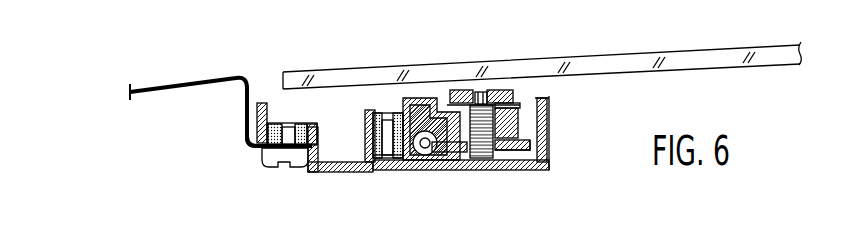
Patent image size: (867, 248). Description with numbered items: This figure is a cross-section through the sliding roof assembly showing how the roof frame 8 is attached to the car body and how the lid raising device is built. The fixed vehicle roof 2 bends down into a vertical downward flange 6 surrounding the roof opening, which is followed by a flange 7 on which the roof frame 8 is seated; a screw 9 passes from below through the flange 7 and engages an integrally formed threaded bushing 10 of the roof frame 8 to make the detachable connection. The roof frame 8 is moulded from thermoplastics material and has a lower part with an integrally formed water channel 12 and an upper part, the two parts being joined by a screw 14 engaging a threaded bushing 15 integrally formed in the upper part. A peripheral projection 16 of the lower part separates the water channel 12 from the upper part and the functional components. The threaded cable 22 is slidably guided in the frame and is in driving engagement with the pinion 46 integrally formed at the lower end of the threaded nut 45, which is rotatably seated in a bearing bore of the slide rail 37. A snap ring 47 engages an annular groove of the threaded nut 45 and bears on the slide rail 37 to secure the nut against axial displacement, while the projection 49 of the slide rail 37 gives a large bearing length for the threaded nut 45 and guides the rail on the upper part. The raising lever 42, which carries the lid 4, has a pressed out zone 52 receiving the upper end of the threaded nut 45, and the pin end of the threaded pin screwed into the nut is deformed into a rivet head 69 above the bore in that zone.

The fixed vehicle roof 2 is at (172, 82).
The lid 4 is at (547, 63).
The vertical downward flange 6 is at (243, 101).
The flange 7 is at (252, 146).
The roof frame 8 is at (447, 167).
The screw 9 is at (273, 157).
The threaded bushing 10 is at (299, 128).
The water channel 12 is at (342, 150).
The screw 14 is at (387, 160).
The threaded bushing 15 is at (375, 136).
The peripheral projection 16 is at (372, 117).
The threaded cable 22 is at (423, 151).
The slide rail 37 is at (418, 87).
The raising lever 42 is at (504, 84).
The threaded nut 45 is at (520, 117).
The pinion 46 is at (515, 143).
The snap ring 47 is at (517, 107).
The projection 49 is at (513, 133).
The pressed out zone 52 is at (455, 97).
The rivet head 69 is at (480, 92).